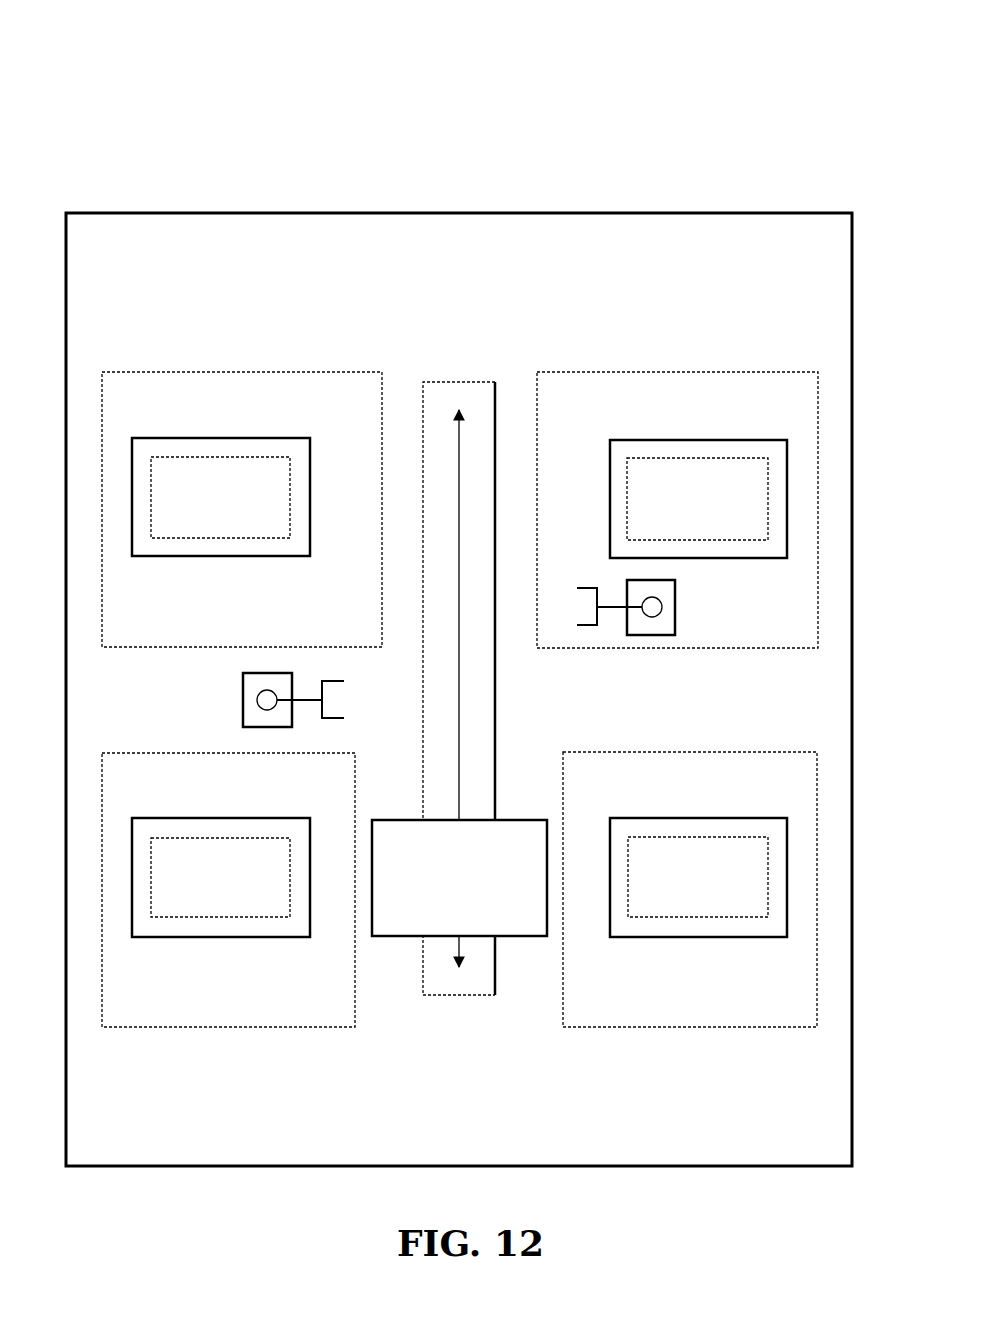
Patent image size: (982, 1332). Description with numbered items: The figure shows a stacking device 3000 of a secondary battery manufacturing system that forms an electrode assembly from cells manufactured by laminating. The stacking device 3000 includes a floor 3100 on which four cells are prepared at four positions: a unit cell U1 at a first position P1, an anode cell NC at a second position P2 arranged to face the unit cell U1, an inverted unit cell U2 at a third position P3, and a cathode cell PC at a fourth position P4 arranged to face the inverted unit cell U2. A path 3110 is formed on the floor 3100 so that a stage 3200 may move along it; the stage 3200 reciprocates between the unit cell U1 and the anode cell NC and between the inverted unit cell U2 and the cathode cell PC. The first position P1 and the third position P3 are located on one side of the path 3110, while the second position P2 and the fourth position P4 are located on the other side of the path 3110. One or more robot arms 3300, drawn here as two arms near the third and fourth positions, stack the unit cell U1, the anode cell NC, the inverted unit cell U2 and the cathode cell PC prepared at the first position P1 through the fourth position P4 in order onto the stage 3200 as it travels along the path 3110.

The stacking device 3000 is at (493, 148).
The floor 3100 is at (268, 213).
The path 3110 is at (422, 432).
The stage 3200 is at (520, 845).
The robot arm 3300 is at (267, 672).
The first position P1 is at (202, 1028).
The second position P2 is at (717, 1028).
The third position P3 is at (350, 372).
The fourth position P4 is at (568, 372).
The unit cell U1 is at (162, 838).
The inverted unit cell U2 is at (220, 457).
The cathode cell PC is at (699, 457).
The anode cell NC is at (700, 838).